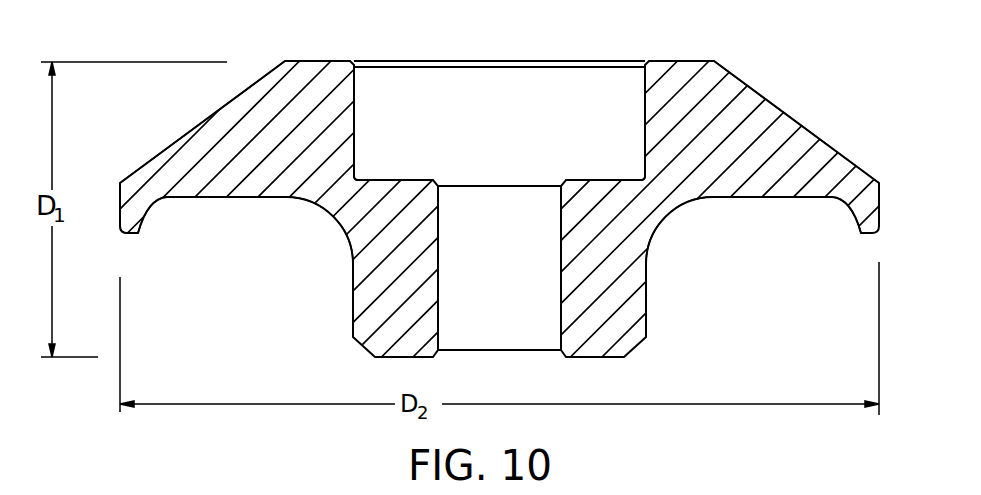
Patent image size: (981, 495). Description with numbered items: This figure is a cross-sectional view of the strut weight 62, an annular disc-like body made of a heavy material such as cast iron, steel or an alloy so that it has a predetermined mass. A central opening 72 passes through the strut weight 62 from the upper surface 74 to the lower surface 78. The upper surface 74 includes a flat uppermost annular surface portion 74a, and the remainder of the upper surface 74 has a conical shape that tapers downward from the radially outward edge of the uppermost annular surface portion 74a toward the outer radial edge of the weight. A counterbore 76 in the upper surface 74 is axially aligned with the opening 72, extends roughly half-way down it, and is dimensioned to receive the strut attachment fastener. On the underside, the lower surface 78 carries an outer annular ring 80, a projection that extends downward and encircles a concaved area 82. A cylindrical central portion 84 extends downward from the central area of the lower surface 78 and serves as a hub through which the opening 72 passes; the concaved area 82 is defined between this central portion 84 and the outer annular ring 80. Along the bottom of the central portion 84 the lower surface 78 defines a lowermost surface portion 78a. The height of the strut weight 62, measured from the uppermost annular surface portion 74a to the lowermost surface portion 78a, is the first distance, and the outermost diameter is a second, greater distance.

The strut weight 62 is at (793, 43).
The central opening 72 is at (561, 285).
The upper surface 74 is at (812, 137).
The uppermost annular surface portion 74a is at (686, 61).
The counterbore 76 is at (645, 110).
The lower surface 78 is at (742, 198).
The lowermost surface portion 78a is at (592, 358).
The outer annular ring 80 is at (133, 235).
The concaved area 82 is at (225, 217).
The central portion 84 is at (352, 298).